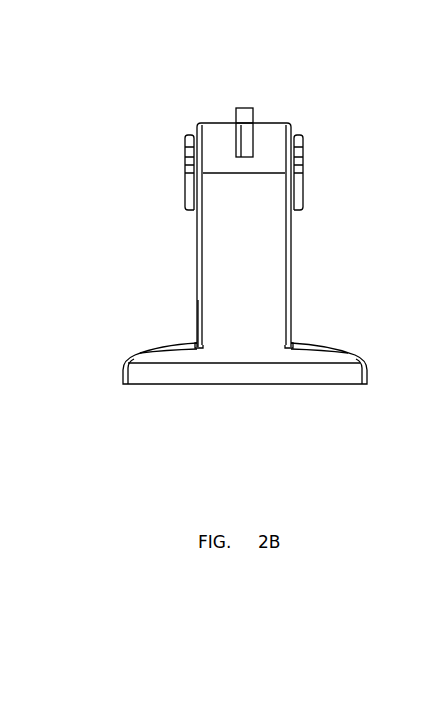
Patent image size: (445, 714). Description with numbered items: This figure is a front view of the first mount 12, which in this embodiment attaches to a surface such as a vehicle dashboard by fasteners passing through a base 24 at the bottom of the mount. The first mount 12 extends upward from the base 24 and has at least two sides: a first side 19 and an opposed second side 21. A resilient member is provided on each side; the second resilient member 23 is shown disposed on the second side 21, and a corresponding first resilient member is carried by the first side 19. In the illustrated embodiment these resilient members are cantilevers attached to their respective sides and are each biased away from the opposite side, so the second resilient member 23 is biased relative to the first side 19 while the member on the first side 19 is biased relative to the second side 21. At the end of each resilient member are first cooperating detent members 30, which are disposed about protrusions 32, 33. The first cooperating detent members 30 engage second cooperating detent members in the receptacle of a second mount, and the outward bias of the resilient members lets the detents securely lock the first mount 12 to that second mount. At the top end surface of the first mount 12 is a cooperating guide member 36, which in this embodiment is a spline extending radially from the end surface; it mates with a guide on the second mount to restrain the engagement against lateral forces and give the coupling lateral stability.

The first mount 12 is at (323, 77).
The first side 19 is at (297, 294).
The second side 21 is at (193, 326).
The second resilient member 23 is at (188, 268).
The base 24 is at (343, 349).
The first cooperating detent members 30 is at (179, 150).
The protrusion 32 is at (305, 213).
The protrusion 33 is at (180, 216).
The cooperating guide member 36 is at (246, 104).